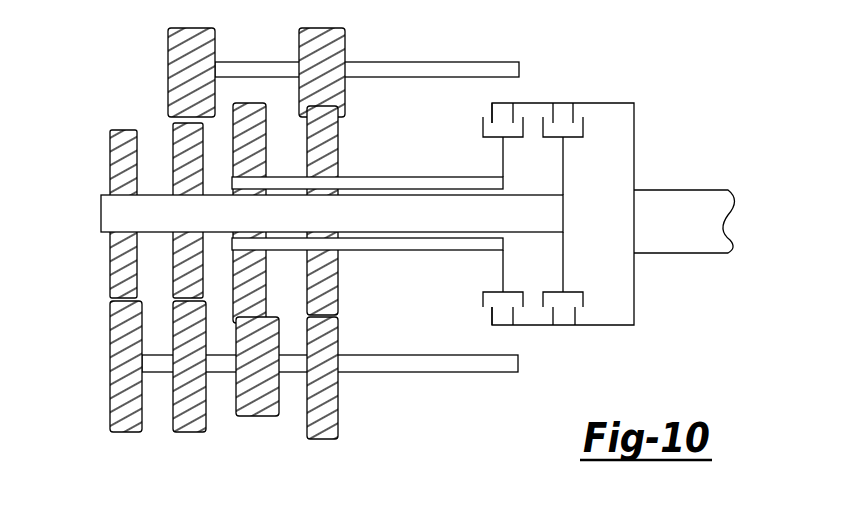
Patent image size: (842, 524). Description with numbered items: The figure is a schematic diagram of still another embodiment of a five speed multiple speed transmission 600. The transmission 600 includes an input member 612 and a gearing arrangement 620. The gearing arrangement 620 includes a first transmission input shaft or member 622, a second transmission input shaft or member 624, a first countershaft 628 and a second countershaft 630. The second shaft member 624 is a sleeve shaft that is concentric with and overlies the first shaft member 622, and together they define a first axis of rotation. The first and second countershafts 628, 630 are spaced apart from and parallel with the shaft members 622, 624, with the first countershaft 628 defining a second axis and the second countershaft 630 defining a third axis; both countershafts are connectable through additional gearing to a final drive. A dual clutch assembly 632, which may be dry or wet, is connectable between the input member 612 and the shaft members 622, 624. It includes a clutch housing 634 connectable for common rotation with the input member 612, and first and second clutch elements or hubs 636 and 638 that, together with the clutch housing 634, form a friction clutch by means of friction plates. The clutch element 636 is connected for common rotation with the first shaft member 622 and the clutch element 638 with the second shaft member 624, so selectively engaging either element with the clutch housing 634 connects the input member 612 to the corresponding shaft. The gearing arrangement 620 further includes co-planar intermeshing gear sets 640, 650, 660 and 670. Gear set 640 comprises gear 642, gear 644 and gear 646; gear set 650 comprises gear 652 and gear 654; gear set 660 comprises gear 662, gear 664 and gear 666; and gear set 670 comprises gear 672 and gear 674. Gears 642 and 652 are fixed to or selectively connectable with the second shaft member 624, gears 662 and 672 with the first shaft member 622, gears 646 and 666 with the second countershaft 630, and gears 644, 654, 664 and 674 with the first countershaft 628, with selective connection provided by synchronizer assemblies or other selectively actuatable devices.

The multiple speed transmission 600 is at (411, 253).
The input member 612 is at (693, 190).
The gearing arrangement 620 is at (303, 253).
The first transmission input shaft 622 is at (523, 205).
The second transmission input shaft 624 is at (431, 180).
The first countershaft 628 is at (503, 360).
The second countershaft 630 is at (445, 72).
The dual clutch assembly 632 is at (613, 189).
The clutch housing 634 is at (634, 298).
The first clutch element 636 is at (563, 258).
The second clutch element 638 is at (503, 268).
The co-planar gear set 640 is at (348, 435).
The gear 642 is at (337, 270).
The gear 644 is at (335, 392).
The gear 646 is at (338, 38).
The co-planar gear set 650 is at (253, 428).
The gear 652 is at (258, 133).
The gear 654 is at (280, 323).
The co-planar gear set 660 is at (188, 437).
The gear 662 is at (173, 147).
The gear 664 is at (175, 315).
The gear 666 is at (187, 38).
The co-planar gear set 670 is at (120, 437).
The gear 672 is at (110, 167).
The gear 674 is at (113, 315).